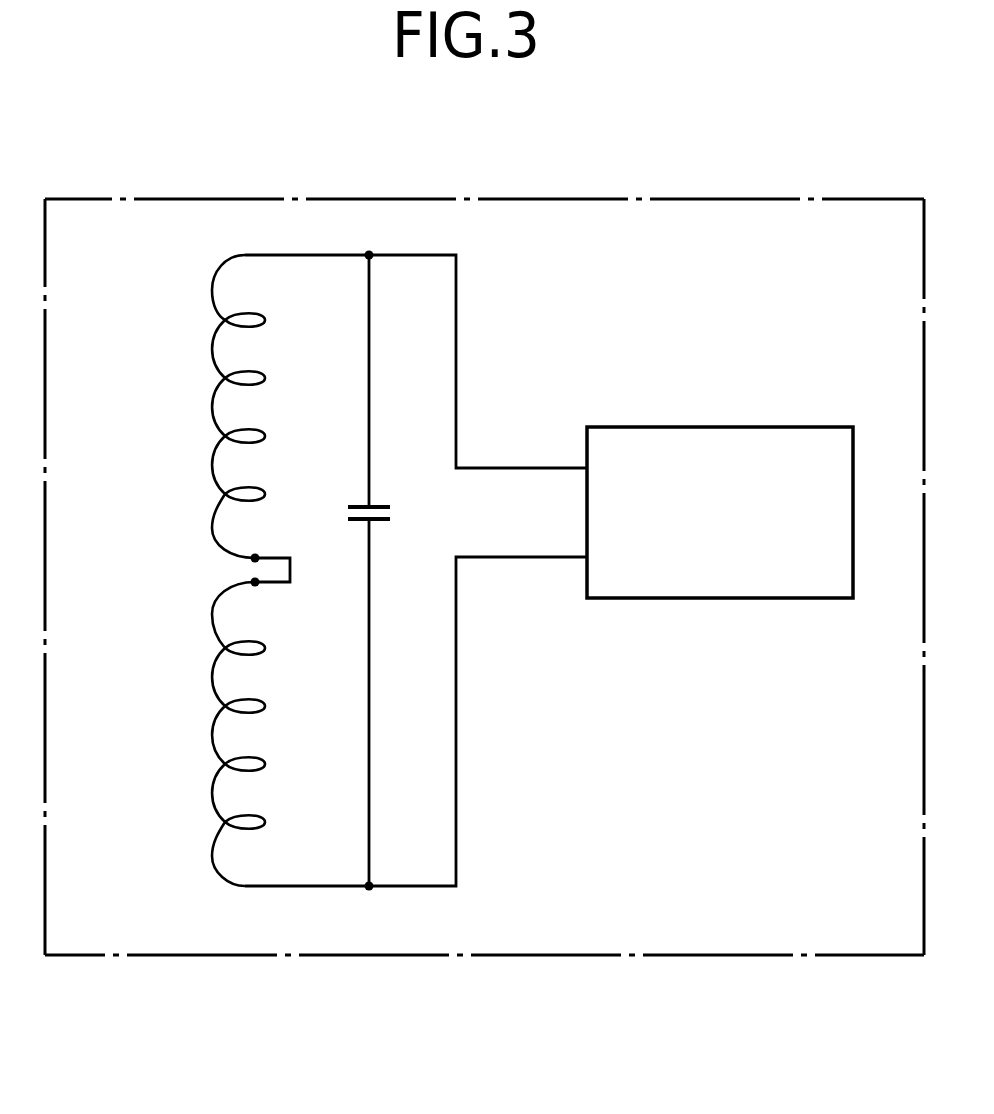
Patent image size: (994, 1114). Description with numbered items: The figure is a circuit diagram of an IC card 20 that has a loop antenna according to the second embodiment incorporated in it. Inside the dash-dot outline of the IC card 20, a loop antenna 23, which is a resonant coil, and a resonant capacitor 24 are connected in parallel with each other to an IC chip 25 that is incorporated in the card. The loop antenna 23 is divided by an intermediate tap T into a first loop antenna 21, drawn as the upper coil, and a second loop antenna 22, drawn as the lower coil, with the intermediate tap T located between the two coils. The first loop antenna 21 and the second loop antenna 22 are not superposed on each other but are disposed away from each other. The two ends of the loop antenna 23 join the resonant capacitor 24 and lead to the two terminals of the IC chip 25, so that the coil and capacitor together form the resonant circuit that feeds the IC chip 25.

The IC card 20 is at (617, 195).
The first loop antenna 21 is at (212, 345).
The second loop antenna 22 is at (212, 677).
The loop antenna 23 is at (190, 570).
The resonant capacitor 24 is at (373, 506).
The IC chip 25 is at (768, 426).
The intermediate tap T is at (258, 556).